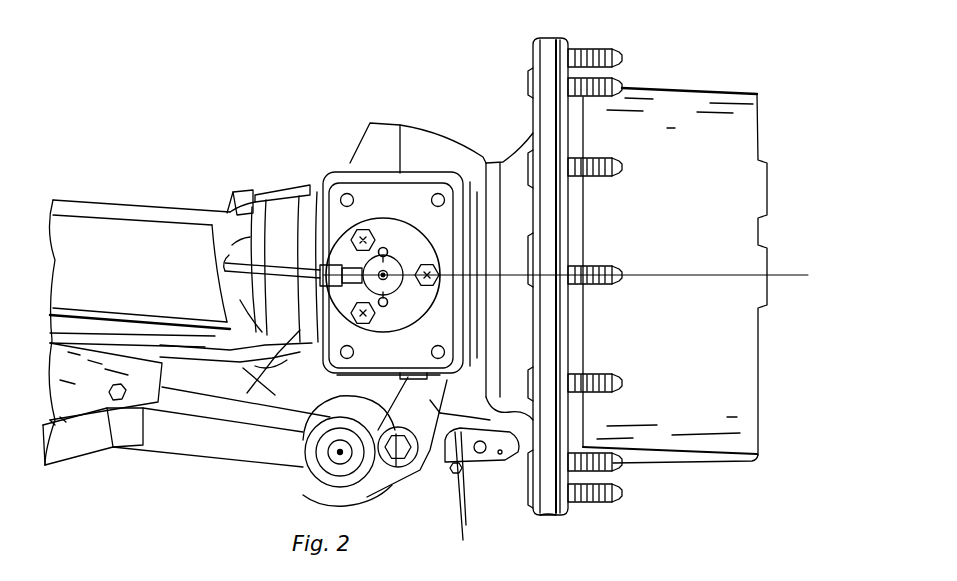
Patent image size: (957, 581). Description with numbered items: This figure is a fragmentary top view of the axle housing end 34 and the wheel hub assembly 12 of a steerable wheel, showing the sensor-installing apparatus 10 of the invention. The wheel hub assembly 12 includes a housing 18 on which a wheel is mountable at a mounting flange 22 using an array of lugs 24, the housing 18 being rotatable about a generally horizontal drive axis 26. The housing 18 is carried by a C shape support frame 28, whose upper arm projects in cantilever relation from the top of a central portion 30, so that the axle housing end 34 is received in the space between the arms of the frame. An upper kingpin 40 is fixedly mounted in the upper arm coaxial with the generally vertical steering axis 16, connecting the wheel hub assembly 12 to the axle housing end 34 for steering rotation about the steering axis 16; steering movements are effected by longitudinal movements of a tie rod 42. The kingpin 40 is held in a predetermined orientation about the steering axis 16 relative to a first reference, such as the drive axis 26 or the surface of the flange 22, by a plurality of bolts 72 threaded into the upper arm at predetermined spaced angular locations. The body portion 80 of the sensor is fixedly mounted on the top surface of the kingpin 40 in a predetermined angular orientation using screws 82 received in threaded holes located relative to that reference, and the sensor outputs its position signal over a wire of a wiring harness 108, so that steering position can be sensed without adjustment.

The apparatus 10 is at (398, 256).
The wheel hub assembly 12 is at (571, 35).
The steering axis 16 is at (256, 366).
The housing 18 is at (758, 93).
The mounting flange 22 is at (562, 516).
The lugs 24 is at (623, 90).
The drive axis 26 is at (797, 275).
The support frame 28 is at (446, 136).
The central portion 30 is at (478, 158).
The axle housing end 34 is at (248, 196).
The upper kingpin 40 is at (385, 218).
The tie rod 42 is at (78, 470).
The bolts 72 is at (356, 233).
The body portion 80 is at (396, 283).
The screws 82 is at (387, 249).
The wiring harness 108 is at (228, 268).